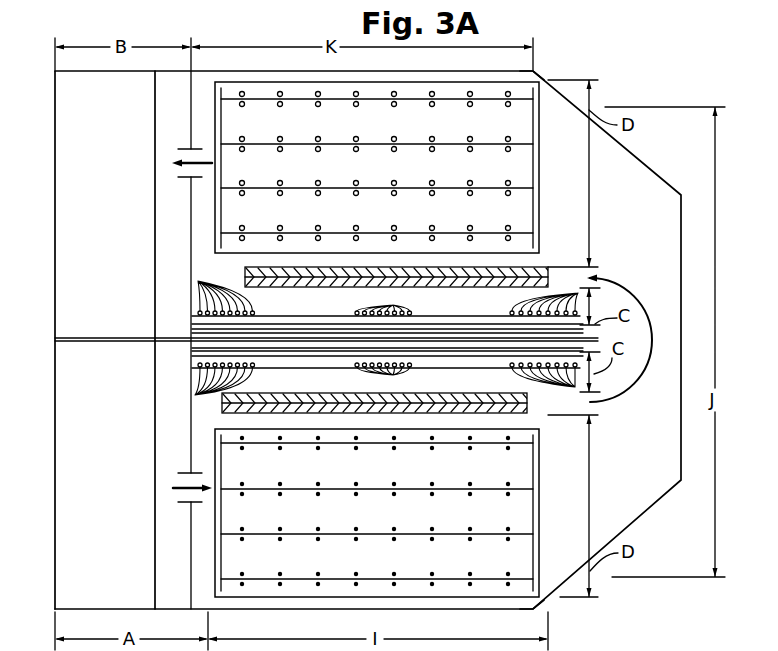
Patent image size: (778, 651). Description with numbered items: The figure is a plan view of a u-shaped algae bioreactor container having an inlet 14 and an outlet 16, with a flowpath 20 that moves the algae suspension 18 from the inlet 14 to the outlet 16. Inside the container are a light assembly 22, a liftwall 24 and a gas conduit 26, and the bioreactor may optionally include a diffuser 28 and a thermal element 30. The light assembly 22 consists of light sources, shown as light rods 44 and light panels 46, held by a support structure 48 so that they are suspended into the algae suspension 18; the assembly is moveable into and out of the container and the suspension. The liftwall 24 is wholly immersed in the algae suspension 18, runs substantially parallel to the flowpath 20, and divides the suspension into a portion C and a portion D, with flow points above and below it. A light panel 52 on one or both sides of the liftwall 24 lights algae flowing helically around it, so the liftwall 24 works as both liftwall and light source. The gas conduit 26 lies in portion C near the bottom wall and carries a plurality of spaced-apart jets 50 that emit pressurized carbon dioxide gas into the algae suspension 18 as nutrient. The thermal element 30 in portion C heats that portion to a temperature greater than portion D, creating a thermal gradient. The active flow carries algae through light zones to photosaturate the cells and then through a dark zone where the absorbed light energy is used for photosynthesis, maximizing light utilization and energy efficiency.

The inlet 14 is at (182, 474).
The outlet 16 is at (186, 174).
The algae suspension 18 is at (627, 505).
The flowpath 20 is at (187, 154).
The light assembly 22 is at (221, 214).
The liftwall 24 is at (462, 278).
The gas conduit 26 is at (194, 311).
The diffuser 28 is at (538, 109).
The thermal element 30 is at (192, 327).
The light rods 44 is at (392, 144).
The light panels 46 is at (445, 540).
The support structure 48 is at (533, 127).
The jets 50 is at (198, 281).
The light panel 52 is at (245, 268).